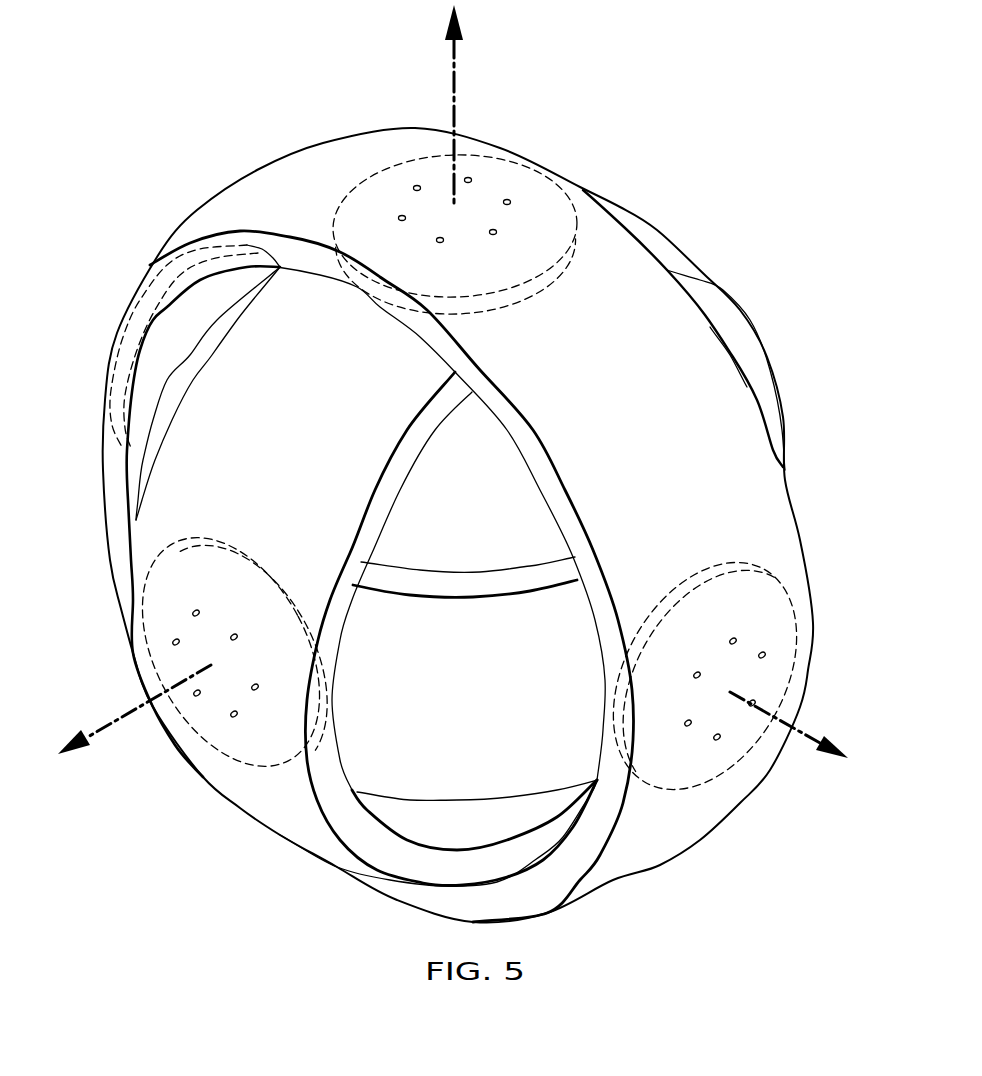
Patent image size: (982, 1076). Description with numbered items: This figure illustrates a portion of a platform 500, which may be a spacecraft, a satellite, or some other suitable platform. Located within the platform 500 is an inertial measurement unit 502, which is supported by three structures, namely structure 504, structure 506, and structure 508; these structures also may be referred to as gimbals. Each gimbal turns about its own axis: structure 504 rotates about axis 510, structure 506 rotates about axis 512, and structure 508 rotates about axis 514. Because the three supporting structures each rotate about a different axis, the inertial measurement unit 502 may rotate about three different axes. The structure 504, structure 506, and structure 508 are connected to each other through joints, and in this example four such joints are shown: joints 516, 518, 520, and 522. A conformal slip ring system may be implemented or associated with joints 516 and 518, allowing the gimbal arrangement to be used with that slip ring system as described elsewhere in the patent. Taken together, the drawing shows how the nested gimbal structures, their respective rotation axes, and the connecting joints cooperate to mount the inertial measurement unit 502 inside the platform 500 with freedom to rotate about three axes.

The platform 500 is at (738, 114).
The inertial measurement unit 502 is at (484, 515).
The structure 504 is at (649, 393).
The structure 506 is at (304, 443).
The structure 508 is at (478, 703).
The axis 510 is at (813, 737).
The axis 512 is at (454, 80).
The axis 514 is at (115, 722).
The joint 516 is at (697, 767).
The joint 518 is at (133, 313).
The joint 520 is at (522, 187).
The joint 522 is at (243, 737).